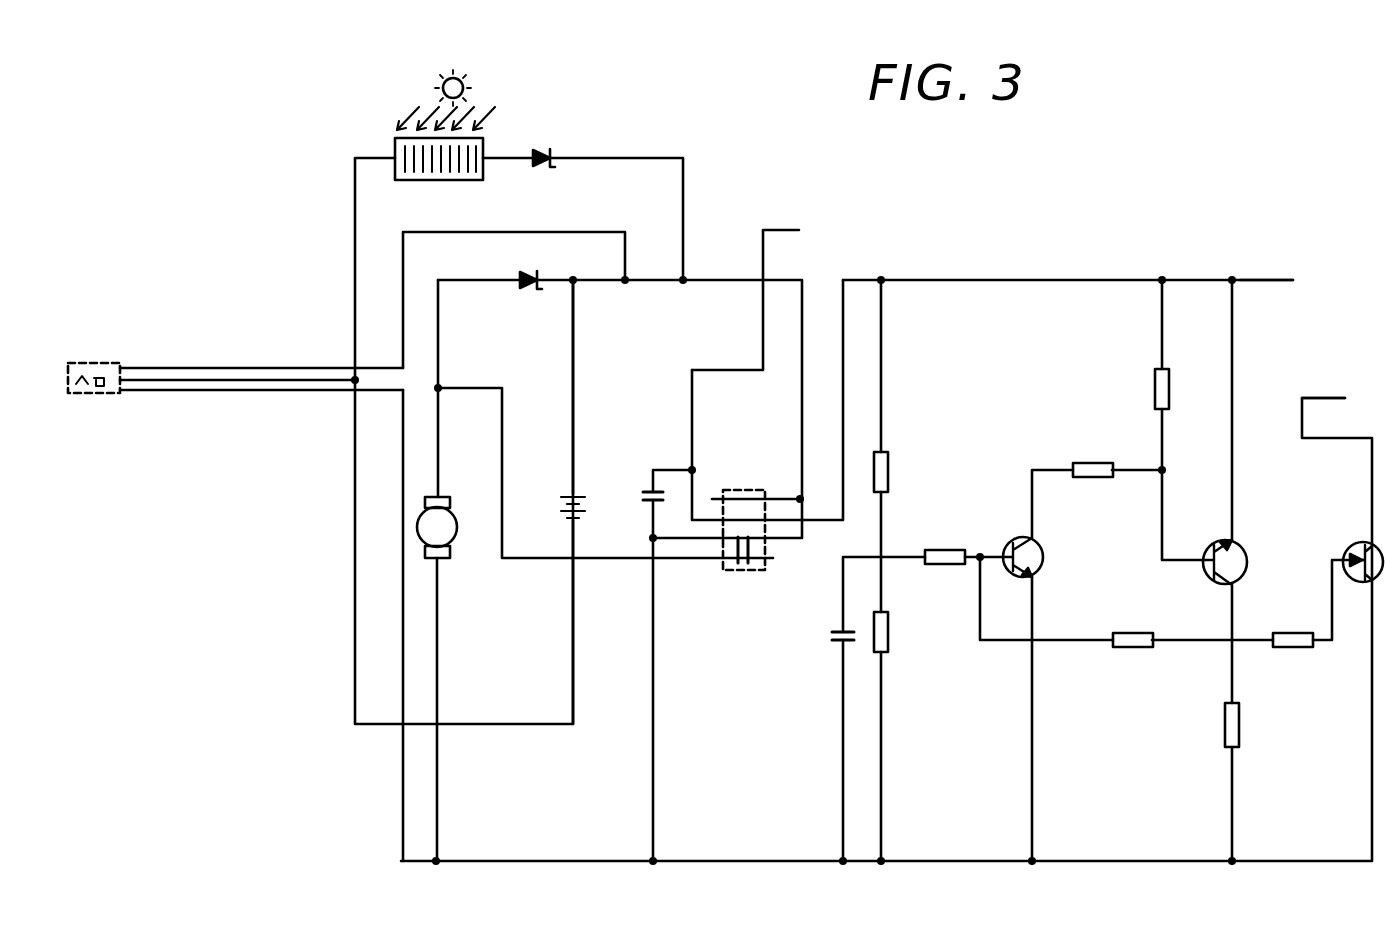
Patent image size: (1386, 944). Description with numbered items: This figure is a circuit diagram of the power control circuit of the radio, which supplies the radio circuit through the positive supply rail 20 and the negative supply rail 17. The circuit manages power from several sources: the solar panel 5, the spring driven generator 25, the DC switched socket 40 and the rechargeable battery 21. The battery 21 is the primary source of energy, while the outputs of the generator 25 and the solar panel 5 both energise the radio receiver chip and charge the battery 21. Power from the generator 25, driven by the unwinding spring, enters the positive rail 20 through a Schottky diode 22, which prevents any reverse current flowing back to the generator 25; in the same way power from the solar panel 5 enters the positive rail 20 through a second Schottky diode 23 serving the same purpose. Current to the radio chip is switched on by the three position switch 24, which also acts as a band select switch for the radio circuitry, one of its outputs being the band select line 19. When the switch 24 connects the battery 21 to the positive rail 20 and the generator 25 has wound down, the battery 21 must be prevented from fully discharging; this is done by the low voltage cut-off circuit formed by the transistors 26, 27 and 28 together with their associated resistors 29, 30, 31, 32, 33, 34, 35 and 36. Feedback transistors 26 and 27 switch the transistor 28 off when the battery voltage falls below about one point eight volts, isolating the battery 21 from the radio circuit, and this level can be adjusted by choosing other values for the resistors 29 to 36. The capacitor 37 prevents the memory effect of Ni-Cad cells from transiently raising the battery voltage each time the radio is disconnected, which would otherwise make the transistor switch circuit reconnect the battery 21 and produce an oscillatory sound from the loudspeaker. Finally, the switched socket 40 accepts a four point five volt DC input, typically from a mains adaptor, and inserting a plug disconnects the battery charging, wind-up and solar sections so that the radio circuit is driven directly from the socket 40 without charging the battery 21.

The solar panel 5 is at (392, 145).
The negative supply rail 17 is at (1325, 396).
The band select line 19 is at (775, 228).
The positive supply rail 20 is at (1272, 278).
The rechargeable battery 21 is at (564, 510).
The Schottky diode 22 is at (528, 292).
The second Schottky diode 23 is at (545, 150).
The three position switch 24 is at (748, 572).
The generator 25 is at (455, 540).
The transistor 26 is at (1038, 548).
The transistor 27 is at (1210, 548).
The transistor 28 is at (1352, 550).
The resistor 29 is at (890, 472).
The resistor 30 is at (890, 633).
The resistor 31 is at (946, 548).
The resistor 32 is at (1080, 460).
The resistor 33 is at (1155, 388).
The resistor 34 is at (1126, 650).
The resistor 35 is at (1290, 650).
The resistor 36 is at (1239, 723).
The capacitor 37 is at (830, 636).
The DC switched socket 40 is at (84, 362).